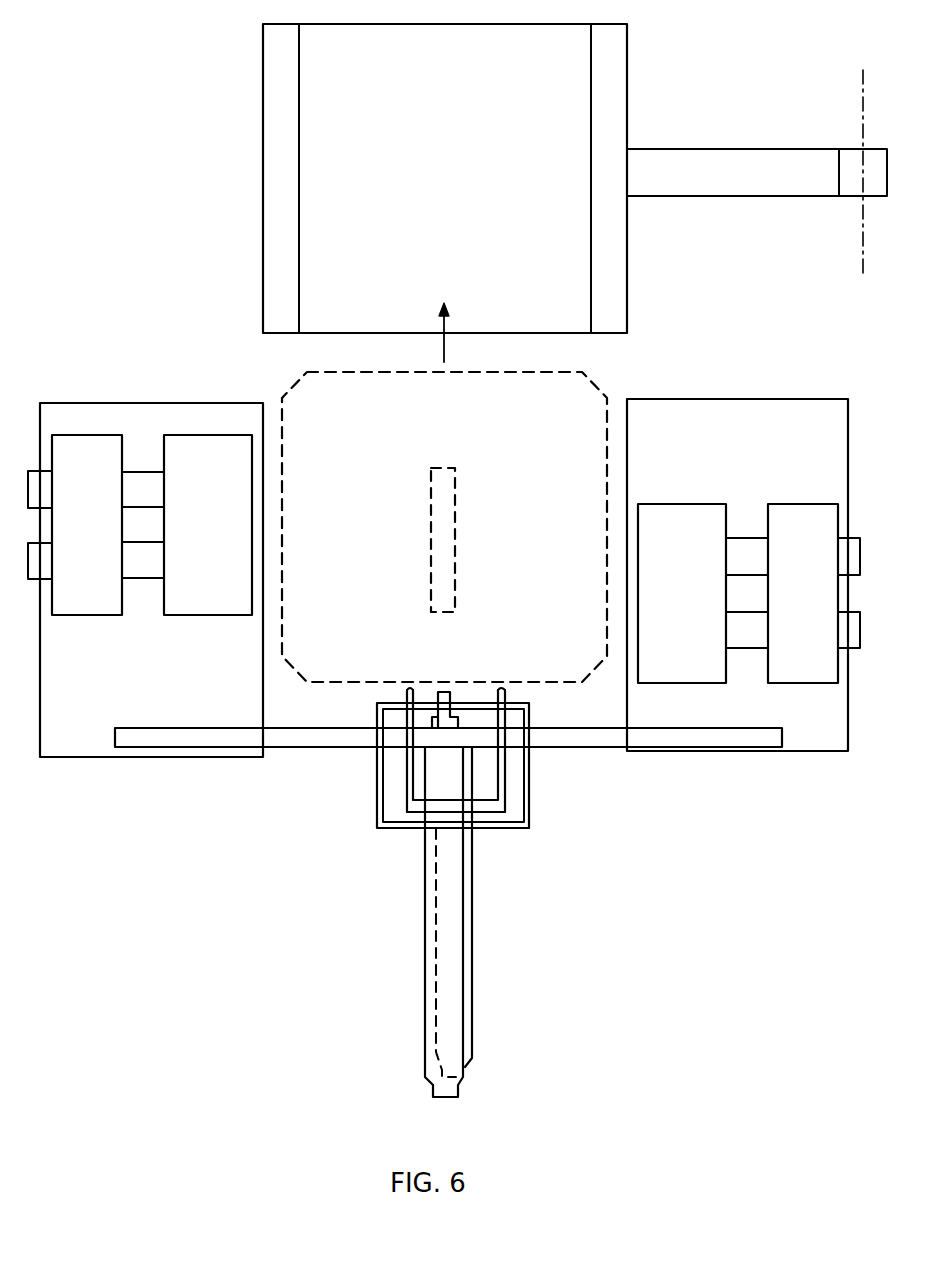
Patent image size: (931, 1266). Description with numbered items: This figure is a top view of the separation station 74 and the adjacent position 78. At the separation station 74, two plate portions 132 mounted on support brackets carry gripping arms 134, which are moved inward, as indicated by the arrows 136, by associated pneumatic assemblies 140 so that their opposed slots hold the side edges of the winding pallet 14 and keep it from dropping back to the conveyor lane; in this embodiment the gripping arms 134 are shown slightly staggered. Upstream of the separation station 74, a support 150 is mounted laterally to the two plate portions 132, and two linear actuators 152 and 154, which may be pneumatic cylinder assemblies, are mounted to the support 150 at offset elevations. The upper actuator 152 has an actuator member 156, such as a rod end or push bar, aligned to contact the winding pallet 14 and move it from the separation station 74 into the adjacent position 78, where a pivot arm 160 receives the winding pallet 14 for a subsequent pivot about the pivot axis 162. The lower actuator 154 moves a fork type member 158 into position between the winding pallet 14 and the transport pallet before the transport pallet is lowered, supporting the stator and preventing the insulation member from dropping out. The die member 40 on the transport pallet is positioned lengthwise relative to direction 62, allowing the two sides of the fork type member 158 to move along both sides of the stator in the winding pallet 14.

The winding pallet 14 is at (609, 378).
The die member 40 is at (429, 519).
The direction 62 is at (318, 803).
The separation station 74 is at (150, 282).
The adjacent position 78 is at (142, 142).
The plate portion 132 is at (88, 403).
The gripping arm 134 is at (217, 615).
The arrow 136 is at (232, 419).
The pneumatic assembly 140 is at (101, 613).
The support 150 is at (583, 748).
The linear actuator 152 is at (425, 967).
The linear actuator 154 is at (475, 975).
The actuator member 156 is at (455, 691).
The fork type member 158 is at (410, 690).
The pivot arm 160 is at (263, 78).
The pivot axis 162 is at (860, 78).